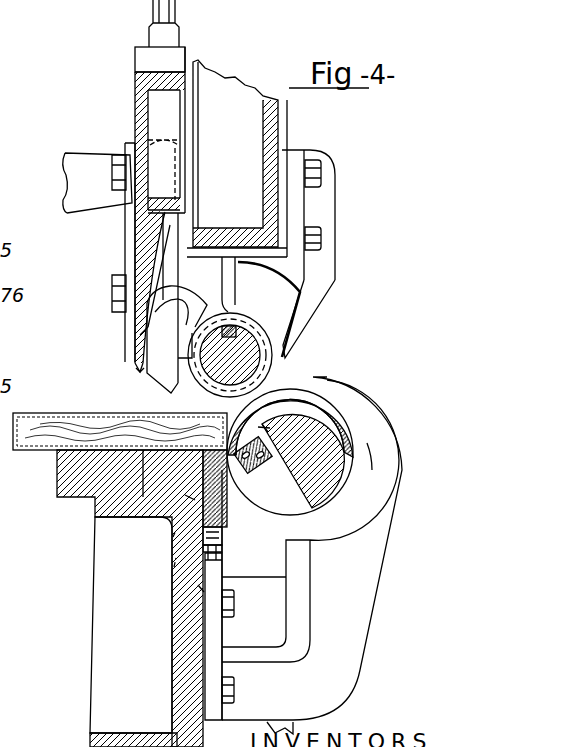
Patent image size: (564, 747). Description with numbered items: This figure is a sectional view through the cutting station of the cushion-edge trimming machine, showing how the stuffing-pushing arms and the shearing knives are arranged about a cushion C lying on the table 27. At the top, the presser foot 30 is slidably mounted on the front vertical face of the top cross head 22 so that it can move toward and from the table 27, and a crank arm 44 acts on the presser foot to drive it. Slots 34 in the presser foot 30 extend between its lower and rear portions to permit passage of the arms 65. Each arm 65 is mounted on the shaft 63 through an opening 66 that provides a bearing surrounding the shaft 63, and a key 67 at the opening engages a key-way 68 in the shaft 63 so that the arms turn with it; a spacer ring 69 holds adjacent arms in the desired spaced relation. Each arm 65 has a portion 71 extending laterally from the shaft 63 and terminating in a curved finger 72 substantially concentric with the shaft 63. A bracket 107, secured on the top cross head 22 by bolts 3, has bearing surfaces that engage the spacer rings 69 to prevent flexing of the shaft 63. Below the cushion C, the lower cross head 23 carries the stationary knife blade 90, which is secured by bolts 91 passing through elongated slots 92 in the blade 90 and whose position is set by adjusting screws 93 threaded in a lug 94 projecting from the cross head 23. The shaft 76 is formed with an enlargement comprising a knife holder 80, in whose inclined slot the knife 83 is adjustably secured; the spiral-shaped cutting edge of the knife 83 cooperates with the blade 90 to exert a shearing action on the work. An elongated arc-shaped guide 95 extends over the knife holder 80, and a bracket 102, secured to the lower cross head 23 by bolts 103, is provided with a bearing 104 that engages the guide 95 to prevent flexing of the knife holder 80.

The top cross head 22 is at (236, 100).
The presser foot 30 is at (135, 243).
The crank arm 44 is at (85, 182).
The slot 34 is at (148, 283).
The laterally extending portion 71 is at (202, 298).
The arm 65 is at (140, 338).
The curved finger 72 is at (140, 372).
The bolt 3 is at (315, 243).
The bracket 107 is at (317, 287).
The opening 66 is at (260, 338).
The key-way 68 is at (243, 330).
The spacer ring 69 is at (290, 343).
The shaft 63 is at (240, 367).
The key 67 is at (228, 326).
The cushion C is at (153, 437).
The table 27 is at (90, 482).
The lower cross head 23 is at (128, 520).
The stationary knife blade 90 is at (190, 498).
The bolt 91 is at (173, 537).
The elongated slot 92 is at (174, 567).
The adjusting screw 93 is at (200, 588).
The knife 83 is at (227, 512).
The bolt 103 is at (230, 617).
The lug 94 is at (218, 558).
The bracket 102 is at (357, 510).
The bearing 104 is at (357, 470).
The knife holder 80 is at (321, 496).
The arc-shaped guide 95 is at (343, 422).
The shaft 76 is at (272, 483).